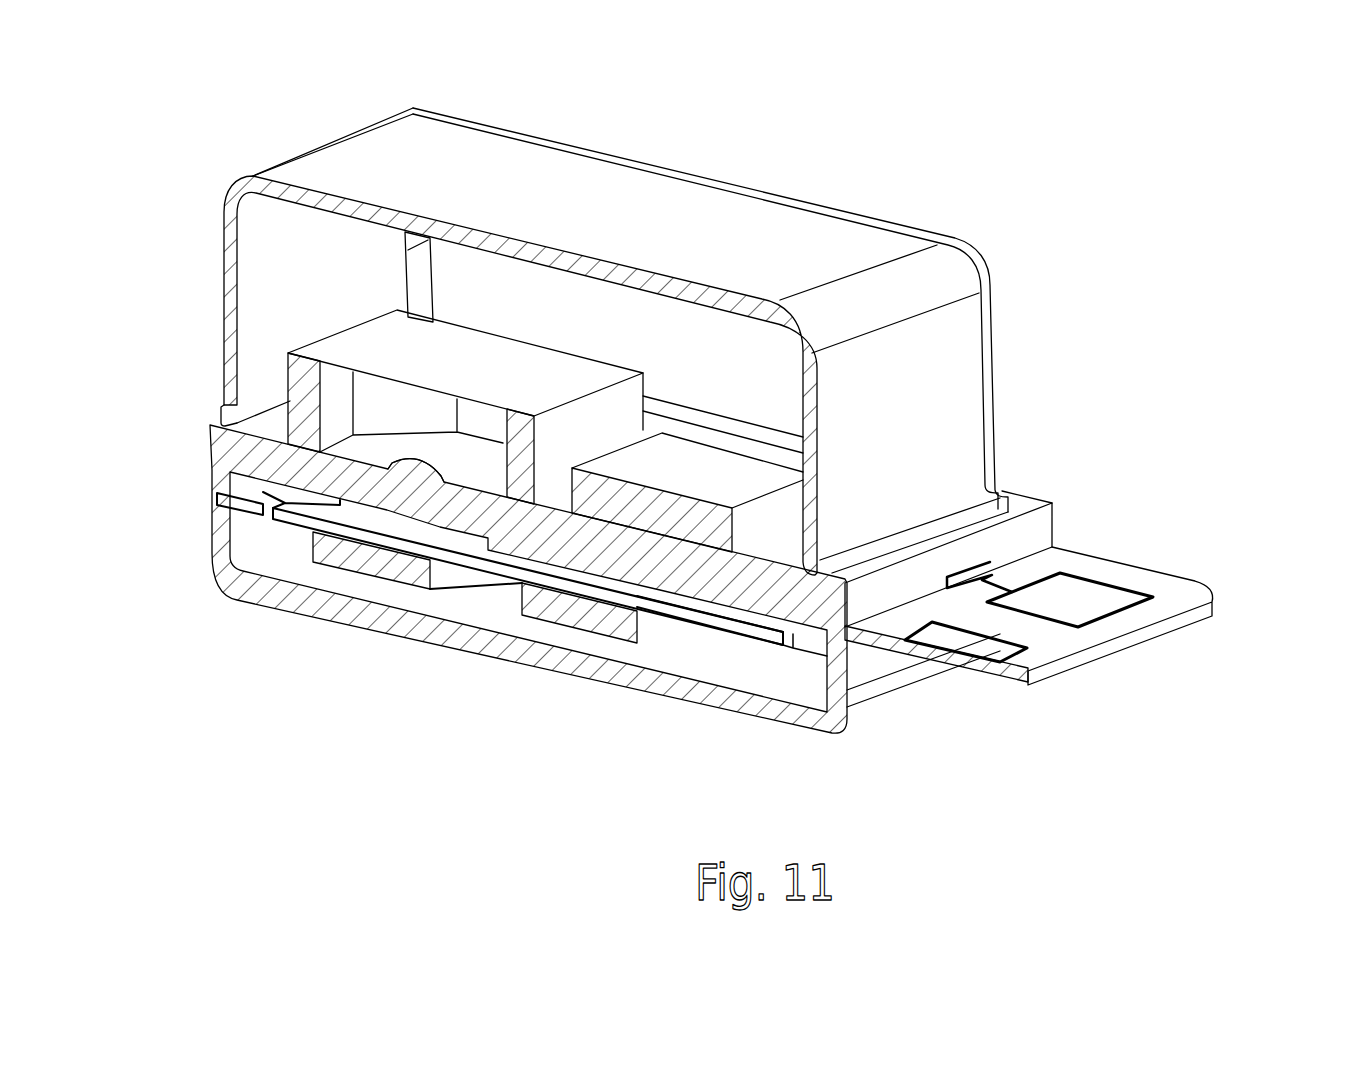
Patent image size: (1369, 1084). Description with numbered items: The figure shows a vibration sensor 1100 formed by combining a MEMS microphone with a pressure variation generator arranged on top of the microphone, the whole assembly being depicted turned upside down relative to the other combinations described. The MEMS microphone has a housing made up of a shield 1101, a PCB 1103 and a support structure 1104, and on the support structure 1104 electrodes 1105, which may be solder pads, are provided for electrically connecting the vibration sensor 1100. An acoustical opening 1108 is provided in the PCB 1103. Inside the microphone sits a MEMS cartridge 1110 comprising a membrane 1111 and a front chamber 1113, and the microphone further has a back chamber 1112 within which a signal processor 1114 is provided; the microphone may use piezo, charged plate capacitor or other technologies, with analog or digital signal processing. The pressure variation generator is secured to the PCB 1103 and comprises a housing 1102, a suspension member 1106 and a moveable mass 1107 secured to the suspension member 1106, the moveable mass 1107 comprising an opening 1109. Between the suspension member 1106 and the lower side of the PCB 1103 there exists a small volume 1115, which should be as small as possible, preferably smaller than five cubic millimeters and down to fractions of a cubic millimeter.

The vibration sensor 1100 is at (992, 214).
The shield 1101 is at (943, 364).
The housing 1102 is at (263, 582).
The PCB 1103 is at (1033, 530).
The support structure 1104 is at (1177, 595).
The electrodes 1105 is at (1097, 598).
The suspension member 1106 is at (735, 630).
The moveable mass 1107 is at (587, 613).
The acoustical opening 1108 is at (403, 490).
The opening 1109 is at (462, 577).
The MEMS cartridge 1110 is at (300, 387).
The membrane 1111 is at (357, 347).
The back chamber 1112 is at (293, 240).
The front chamber 1113 is at (370, 448).
The signal processor 1114 is at (700, 477).
The small volume 1115 is at (678, 603).